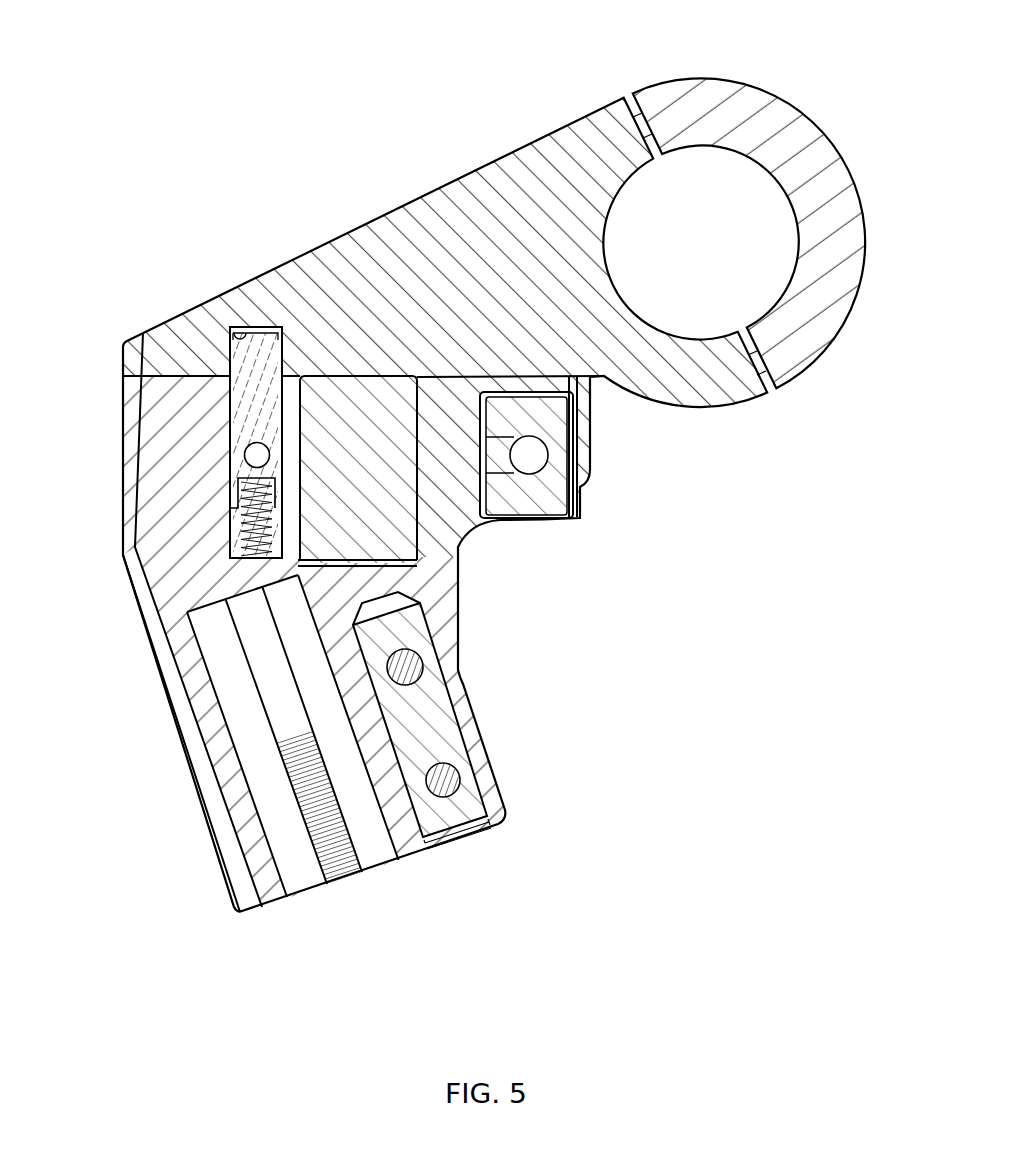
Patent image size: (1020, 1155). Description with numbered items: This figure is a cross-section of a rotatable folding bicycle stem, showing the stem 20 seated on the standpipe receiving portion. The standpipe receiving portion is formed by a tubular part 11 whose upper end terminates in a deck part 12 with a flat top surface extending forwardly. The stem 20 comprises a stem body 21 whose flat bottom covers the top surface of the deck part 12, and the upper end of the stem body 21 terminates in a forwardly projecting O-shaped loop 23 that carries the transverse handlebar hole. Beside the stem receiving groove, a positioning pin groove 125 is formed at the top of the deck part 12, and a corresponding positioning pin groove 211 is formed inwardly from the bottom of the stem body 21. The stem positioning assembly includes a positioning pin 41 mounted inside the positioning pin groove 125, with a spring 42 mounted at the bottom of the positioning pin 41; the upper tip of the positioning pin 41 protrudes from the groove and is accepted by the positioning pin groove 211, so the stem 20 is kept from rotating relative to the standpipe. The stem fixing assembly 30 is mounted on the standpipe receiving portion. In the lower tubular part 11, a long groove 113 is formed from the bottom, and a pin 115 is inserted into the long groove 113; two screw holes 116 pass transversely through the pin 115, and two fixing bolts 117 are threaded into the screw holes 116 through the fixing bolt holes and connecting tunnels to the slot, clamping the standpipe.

The stem 20 is at (402, 132).
The stem body 21 is at (352, 256).
The O-shaped loop 23 is at (716, 88).
The positioning pin groove 211 is at (232, 338).
The positioning pin 41 is at (243, 387).
The positioning pin groove 125 is at (236, 402).
The deck part 12 is at (150, 465).
The spring 42 is at (243, 533).
The stem fixing assembly 30 is at (609, 520).
The tubular part 11 is at (228, 767).
The long groove 113 is at (447, 703).
The screw holes 116 is at (458, 781).
The fixing bolts 117 is at (443, 788).
The pin 115 is at (449, 814).